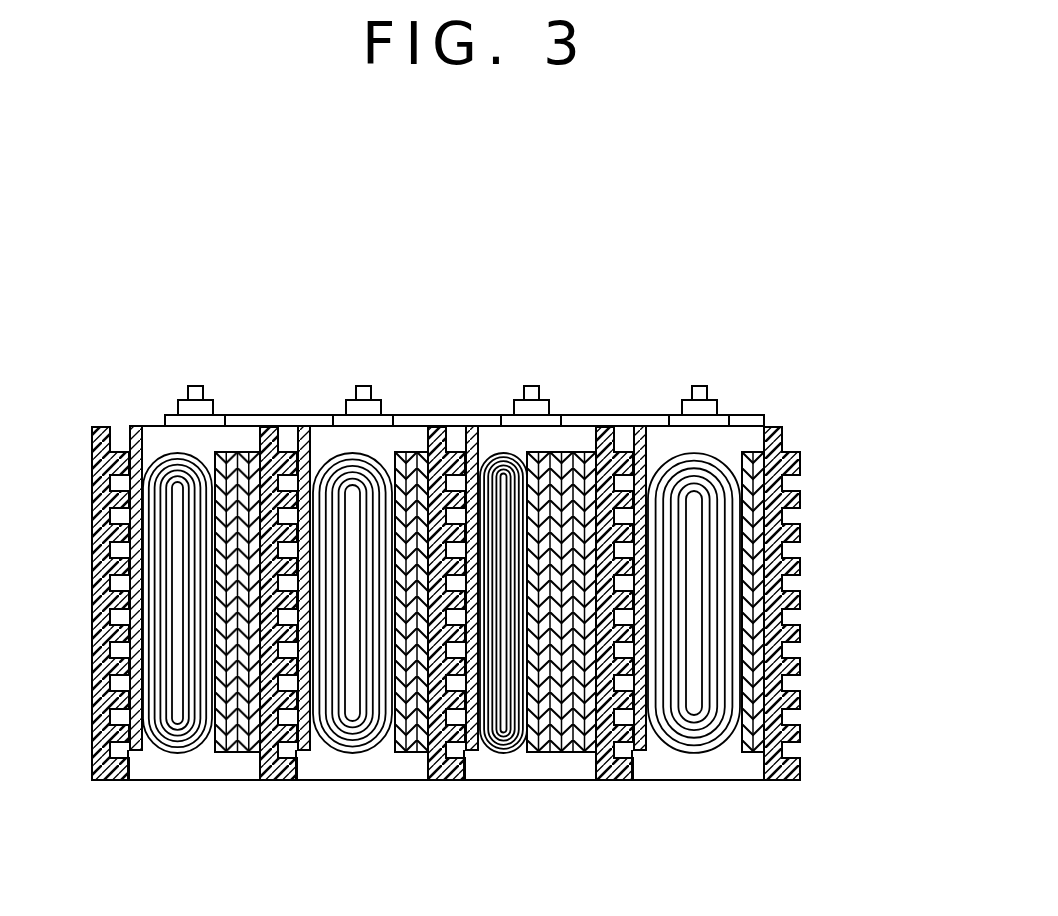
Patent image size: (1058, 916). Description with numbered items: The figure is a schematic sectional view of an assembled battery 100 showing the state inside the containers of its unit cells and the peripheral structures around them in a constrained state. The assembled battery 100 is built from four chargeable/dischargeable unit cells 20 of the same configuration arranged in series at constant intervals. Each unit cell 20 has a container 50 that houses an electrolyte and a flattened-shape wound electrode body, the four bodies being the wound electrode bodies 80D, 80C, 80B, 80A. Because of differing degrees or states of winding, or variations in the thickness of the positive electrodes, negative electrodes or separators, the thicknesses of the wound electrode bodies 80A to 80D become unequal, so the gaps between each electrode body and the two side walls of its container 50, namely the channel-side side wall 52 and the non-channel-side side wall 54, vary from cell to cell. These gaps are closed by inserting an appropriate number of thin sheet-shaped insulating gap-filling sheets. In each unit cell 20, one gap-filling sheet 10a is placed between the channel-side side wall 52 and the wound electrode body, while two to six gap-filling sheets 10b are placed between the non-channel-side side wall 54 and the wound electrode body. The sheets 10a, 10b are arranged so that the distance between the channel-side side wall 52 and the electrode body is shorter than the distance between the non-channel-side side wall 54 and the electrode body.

The assembled battery 100 is at (808, 313).
The wound electrode body 80D is at (173, 755).
The wound electrode body 80C is at (341, 755).
The wound electrode body 80B is at (509, 755).
The wound electrode body 80A is at (677, 755).
The channel-side side wall 52 is at (128, 427).
The non-channel-side side wall 54 is at (268, 430).
The gap-filling sheet 10a is at (128, 752).
The gap-filling sheets 10b is at (254, 752).
The unit cell 20 is at (455, 821).
The container 50 is at (185, 780).